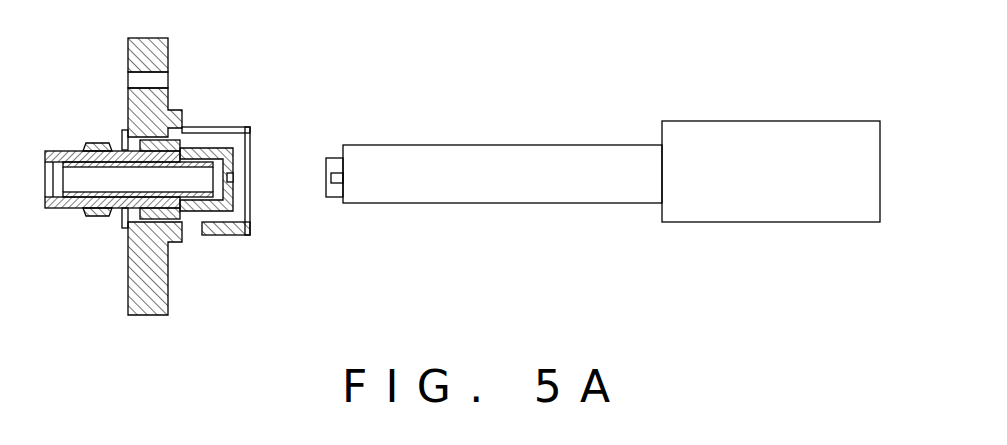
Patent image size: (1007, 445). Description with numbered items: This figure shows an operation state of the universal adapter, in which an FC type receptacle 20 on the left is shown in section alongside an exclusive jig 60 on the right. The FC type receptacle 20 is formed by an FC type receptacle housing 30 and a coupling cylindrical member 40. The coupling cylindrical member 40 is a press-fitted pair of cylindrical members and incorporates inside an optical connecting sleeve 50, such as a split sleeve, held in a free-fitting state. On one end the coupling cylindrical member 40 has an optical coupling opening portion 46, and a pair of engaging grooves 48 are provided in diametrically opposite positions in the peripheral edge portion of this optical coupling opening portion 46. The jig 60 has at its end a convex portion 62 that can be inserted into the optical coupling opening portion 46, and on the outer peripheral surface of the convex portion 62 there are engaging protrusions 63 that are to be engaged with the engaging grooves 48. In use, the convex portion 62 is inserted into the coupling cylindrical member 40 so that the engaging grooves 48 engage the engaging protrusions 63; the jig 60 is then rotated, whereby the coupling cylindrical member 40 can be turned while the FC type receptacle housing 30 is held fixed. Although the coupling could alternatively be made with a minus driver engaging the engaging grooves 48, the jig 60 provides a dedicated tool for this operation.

The FC type receptacle 20 is at (96, 98).
The FC type receptacle housing 30 is at (188, 100).
The coupling cylindrical member 40 is at (73, 145).
The optical coupling opening portion 46 is at (234, 196).
The engaging grooves 48 is at (236, 178).
The optical connecting sleeve 50 is at (199, 224).
The jig 60 is at (485, 118).
The convex portion 62 is at (330, 158).
The engaging protrusions 63 is at (335, 184).